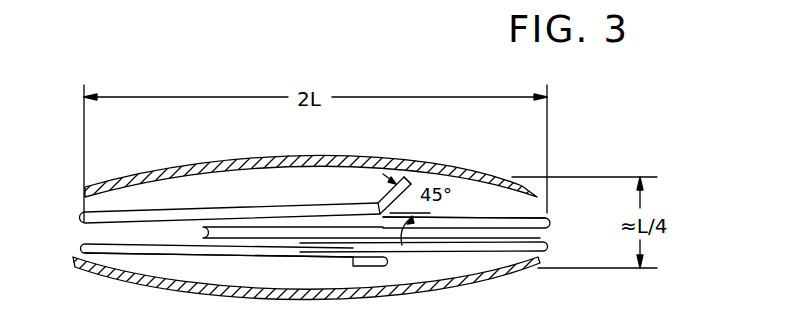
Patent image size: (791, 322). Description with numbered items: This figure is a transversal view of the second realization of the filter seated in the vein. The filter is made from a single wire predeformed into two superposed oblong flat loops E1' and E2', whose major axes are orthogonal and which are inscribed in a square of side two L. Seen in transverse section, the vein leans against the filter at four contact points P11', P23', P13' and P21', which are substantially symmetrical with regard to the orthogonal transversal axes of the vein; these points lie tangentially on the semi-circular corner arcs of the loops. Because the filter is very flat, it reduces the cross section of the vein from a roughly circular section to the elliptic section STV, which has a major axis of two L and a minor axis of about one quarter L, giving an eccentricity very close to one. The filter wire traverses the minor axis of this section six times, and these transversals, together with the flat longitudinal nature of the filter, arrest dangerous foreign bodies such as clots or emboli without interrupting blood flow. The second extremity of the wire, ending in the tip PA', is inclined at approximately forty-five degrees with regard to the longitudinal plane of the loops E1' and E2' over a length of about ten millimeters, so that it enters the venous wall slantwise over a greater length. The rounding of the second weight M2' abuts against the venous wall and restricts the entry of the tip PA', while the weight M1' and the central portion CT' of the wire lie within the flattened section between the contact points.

The elliptic section STV is at (139, 171).
The contact point P21' is at (193, 202).
The contact point P23' is at (493, 206).
The contact point P11' is at (177, 252).
The contact point P13' is at (453, 254).
The center connecting plate CT' is at (357, 208).
The second weight M2' is at (357, 195).
The lower mounting member M1' is at (399, 289).
The tip PA' is at (429, 159).
The oblong flat loop E2' is at (464, 182).
The oblong flat loop E1' is at (306, 284).